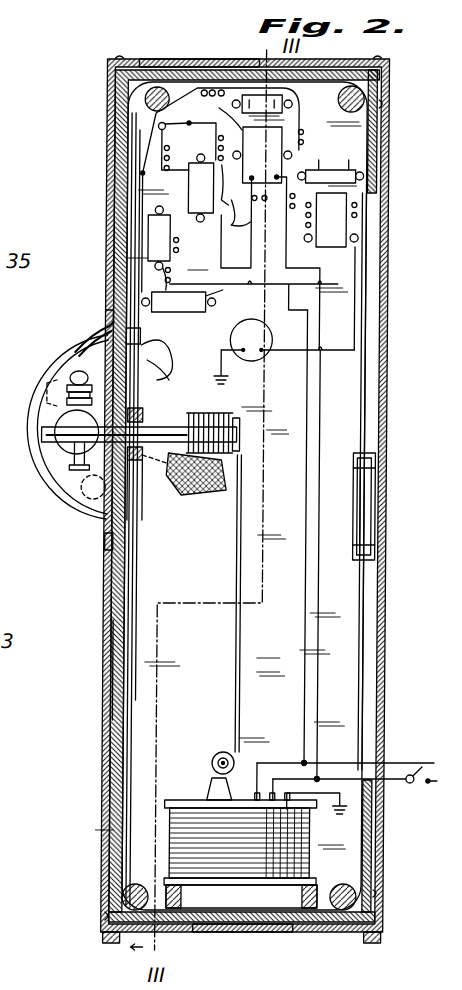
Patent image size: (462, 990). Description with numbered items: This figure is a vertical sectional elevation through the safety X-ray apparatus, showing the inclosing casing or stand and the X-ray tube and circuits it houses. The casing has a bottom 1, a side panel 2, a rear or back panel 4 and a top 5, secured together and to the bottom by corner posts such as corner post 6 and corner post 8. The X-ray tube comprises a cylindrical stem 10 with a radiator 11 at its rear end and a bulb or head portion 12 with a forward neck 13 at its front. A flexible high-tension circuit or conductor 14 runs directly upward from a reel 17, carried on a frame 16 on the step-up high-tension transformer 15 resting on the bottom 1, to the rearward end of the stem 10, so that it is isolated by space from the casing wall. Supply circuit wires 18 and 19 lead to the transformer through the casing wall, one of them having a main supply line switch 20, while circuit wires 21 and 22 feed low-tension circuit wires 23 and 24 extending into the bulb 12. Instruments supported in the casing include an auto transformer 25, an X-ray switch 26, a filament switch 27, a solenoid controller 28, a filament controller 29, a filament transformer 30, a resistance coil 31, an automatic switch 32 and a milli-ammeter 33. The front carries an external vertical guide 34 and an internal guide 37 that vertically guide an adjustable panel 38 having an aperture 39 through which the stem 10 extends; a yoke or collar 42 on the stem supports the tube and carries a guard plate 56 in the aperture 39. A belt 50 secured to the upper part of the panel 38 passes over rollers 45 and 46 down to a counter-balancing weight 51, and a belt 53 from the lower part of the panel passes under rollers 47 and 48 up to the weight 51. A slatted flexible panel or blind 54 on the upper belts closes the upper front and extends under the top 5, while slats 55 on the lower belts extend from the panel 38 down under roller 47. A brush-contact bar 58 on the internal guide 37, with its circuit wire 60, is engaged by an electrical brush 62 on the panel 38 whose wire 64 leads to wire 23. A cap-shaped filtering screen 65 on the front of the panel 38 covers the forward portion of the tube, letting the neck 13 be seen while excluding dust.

The bottom 1 is at (252, 926).
The side panel 2 is at (356, 633).
The rear or back panel 4 is at (383, 657).
The top 5 is at (190, 66).
The corner post 6 is at (112, 927).
The corner post 8 is at (386, 927).
The cylindrical stem 10 is at (168, 424).
The radiator 11 is at (230, 416).
The bulb or head portion 12 is at (74, 468).
The forward neck 13 is at (48, 412).
The high-tension electrical circuit or conductor 14 is at (240, 566).
The step-up high-tension transformer 15 is at (317, 832).
The frame 16 is at (216, 788).
The reel 17 is at (225, 753).
The supply circuit wire 18 is at (328, 762).
The supply circuit wire 19 is at (404, 782).
The main supply line switch 20 is at (428, 788).
The circuit wire 21 is at (302, 664).
The circuit wire 22 is at (324, 684).
The low-tension circuit wire 23 is at (82, 348).
The low-tension circuit wire 24 is at (62, 450).
The auto transformer 25 is at (293, 104).
The X-ray switch 26 is at (195, 116).
The filament switch 27 is at (221, 110).
The solenoid controller 28 is at (196, 176).
The filament controller 29 is at (322, 172).
The filament transformer 30 is at (330, 271).
The resistance coil 31 is at (152, 205).
The automatic switch 32 is at (188, 314).
The milli-ammeter 33 is at (248, 322).
The external vertical guide 34 is at (114, 232).
The internal guide 37 is at (136, 778).
The adjustable panel 38 is at (112, 552).
The aperture 39 is at (133, 500).
The yoke or collar 42 is at (146, 400).
The roller 45 is at (157, 90).
The roller 46 is at (351, 88).
The roller 47 is at (130, 894).
The roller 48 is at (362, 895).
The belt 50 is at (195, 80).
The counter-balancing weight 51 is at (357, 481).
The belt 53 is at (372, 598).
The flexible panel or blind 54 is at (118, 196).
The slats 55 is at (118, 665).
The guard plate 56 is at (90, 497).
The brush-contact bar or rod 58 is at (138, 263).
The circuit wire 60 is at (142, 146).
The electrical brush 62 is at (143, 346).
The circuit wire 64 is at (170, 364).
The cap-shaped filtering screen 65 is at (62, 372).